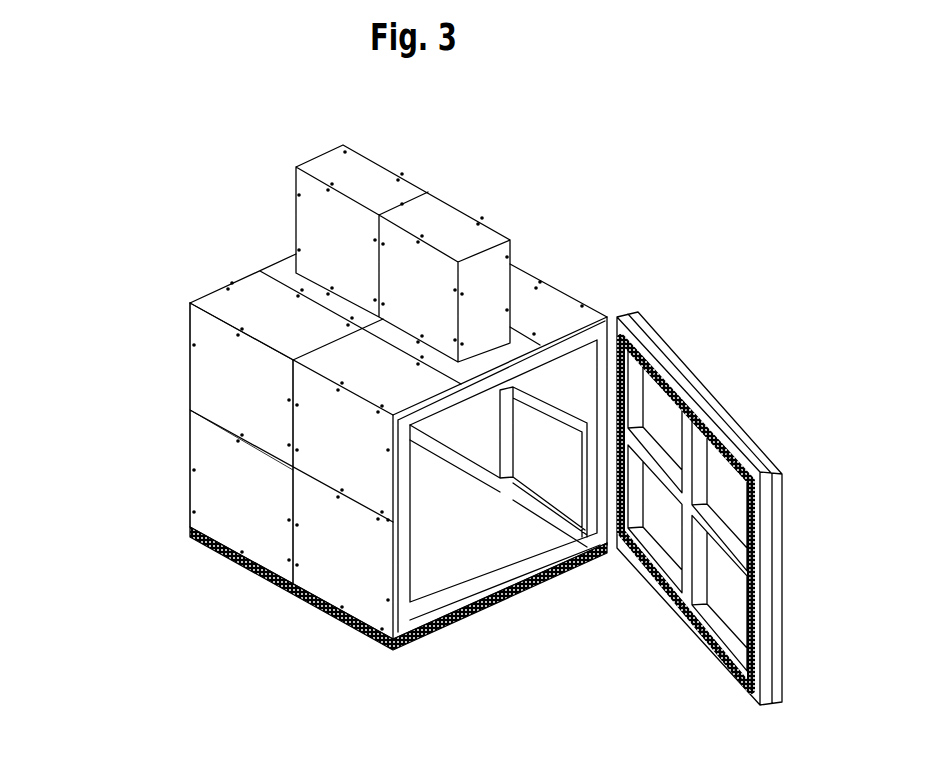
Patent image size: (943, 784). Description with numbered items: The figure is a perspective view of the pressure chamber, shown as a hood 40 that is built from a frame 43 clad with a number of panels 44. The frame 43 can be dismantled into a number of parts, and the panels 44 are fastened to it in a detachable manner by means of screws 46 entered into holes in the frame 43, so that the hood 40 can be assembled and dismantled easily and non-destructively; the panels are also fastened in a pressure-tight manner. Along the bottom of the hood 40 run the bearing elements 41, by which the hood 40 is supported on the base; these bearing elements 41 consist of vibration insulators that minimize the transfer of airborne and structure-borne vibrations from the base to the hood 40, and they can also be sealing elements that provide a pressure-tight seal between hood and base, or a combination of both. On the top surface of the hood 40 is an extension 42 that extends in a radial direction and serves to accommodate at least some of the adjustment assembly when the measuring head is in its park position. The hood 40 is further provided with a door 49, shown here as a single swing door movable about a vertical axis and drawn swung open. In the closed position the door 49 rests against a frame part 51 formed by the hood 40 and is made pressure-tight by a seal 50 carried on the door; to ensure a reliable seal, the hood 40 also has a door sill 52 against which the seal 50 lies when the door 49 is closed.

The hood 40 is at (578, 290).
The bearing elements 41 is at (344, 621).
The extension 42 is at (455, 208).
The frame 43 is at (497, 446).
The panels 44 is at (231, 378).
The screws 46 is at (195, 412).
The door 49 is at (702, 392).
The seal 50 is at (687, 621).
The frame part 51 is at (573, 343).
The door sill 52 is at (477, 590).